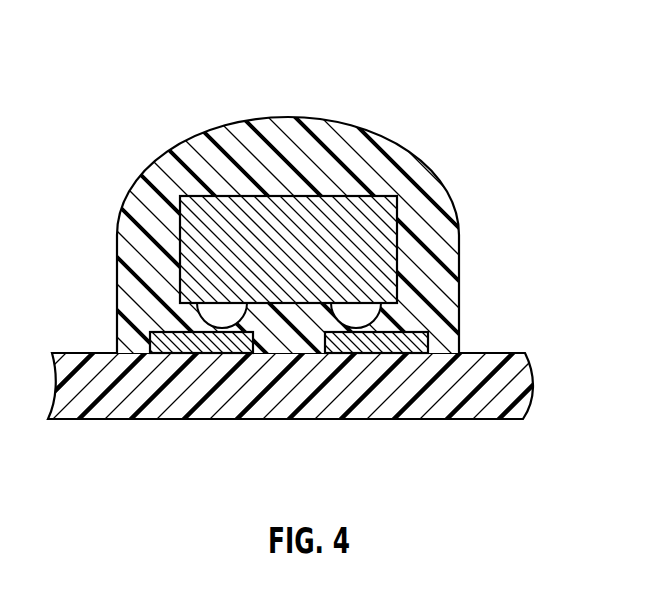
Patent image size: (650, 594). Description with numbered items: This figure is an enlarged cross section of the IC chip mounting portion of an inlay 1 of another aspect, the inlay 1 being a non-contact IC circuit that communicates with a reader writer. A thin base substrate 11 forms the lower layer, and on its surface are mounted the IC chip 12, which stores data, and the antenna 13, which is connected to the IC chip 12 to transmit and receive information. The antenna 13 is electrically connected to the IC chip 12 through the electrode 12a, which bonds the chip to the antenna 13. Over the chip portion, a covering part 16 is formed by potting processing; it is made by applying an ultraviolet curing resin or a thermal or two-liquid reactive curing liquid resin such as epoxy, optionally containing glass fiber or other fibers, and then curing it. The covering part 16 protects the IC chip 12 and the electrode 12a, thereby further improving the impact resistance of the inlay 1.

The inlay 1 is at (300, 53).
The base substrate 11 is at (513, 386).
The IC chip 12 is at (399, 215).
The electrode 12a is at (362, 318).
The antenna 13 is at (157, 345).
The covering part 16 is at (340, 144).